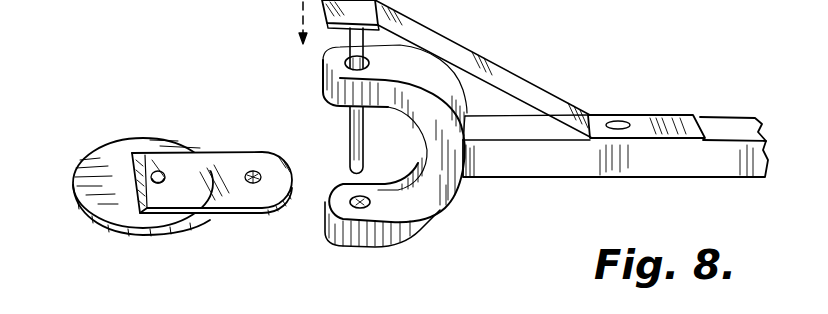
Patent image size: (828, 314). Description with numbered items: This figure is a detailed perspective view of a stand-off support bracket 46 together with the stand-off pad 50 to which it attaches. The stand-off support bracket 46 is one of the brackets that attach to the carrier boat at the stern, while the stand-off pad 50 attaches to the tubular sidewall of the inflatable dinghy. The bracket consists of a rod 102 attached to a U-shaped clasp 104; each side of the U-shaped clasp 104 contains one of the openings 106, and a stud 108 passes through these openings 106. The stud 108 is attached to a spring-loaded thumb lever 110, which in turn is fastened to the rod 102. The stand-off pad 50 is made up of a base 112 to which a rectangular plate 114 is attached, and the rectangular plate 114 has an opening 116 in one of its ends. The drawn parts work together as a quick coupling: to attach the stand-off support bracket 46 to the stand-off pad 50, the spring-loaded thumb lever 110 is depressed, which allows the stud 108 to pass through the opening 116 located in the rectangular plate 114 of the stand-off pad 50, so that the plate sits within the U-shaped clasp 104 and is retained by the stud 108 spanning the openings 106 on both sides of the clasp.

The stand-off support bracket 46 is at (505, 190).
The stand-off pad 50 is at (165, 237).
The rod 102 is at (658, 163).
The U-shaped clasp 104 is at (413, 226).
The openings 106 is at (332, 57).
The stud 108 is at (355, 135).
The spring-loaded thumb lever 110 is at (460, 54).
The base 112 is at (117, 147).
The rectangular plate 114 is at (207, 153).
The opening 116 is at (253, 184).